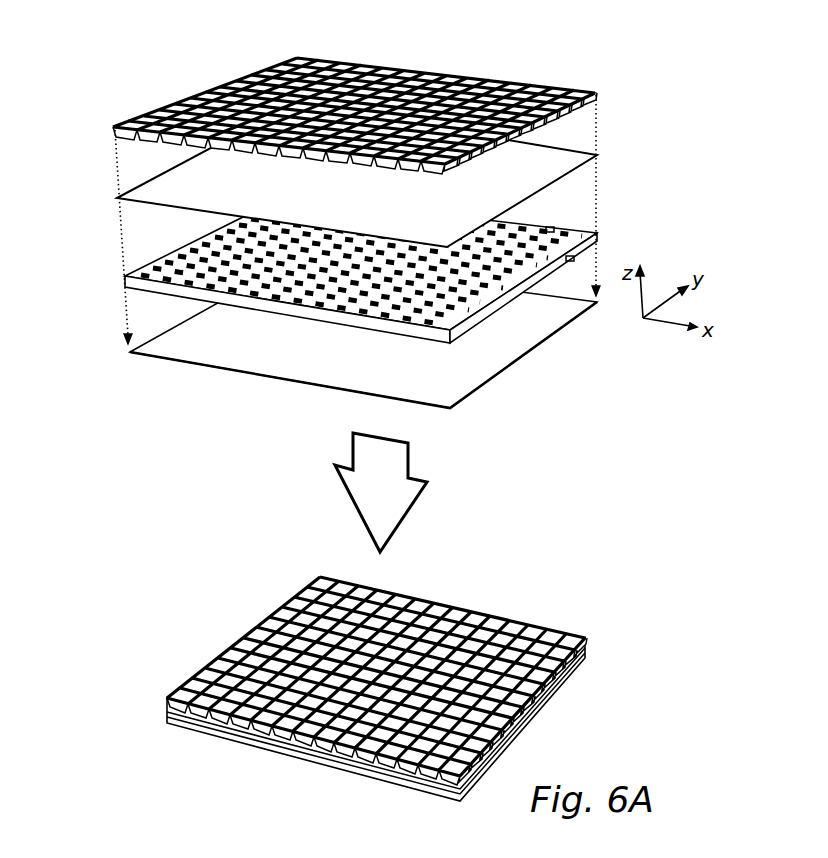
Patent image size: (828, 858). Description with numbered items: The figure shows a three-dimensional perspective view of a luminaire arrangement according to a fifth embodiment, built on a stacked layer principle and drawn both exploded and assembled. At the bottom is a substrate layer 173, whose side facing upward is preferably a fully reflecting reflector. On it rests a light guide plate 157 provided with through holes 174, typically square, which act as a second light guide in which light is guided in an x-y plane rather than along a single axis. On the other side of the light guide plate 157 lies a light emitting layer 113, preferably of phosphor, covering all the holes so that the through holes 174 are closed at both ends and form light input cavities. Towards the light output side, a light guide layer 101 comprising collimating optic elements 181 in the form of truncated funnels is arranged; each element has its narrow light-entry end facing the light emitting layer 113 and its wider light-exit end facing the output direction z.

The light guide layer 101 is at (646, 101).
The light emitting layer 113 is at (143, 192).
The light guide plate 157 is at (470, 321).
The substrate layer 173 is at (193, 352).
The through holes 174 is at (552, 230).
The collimating optic elements 181 is at (162, 117).